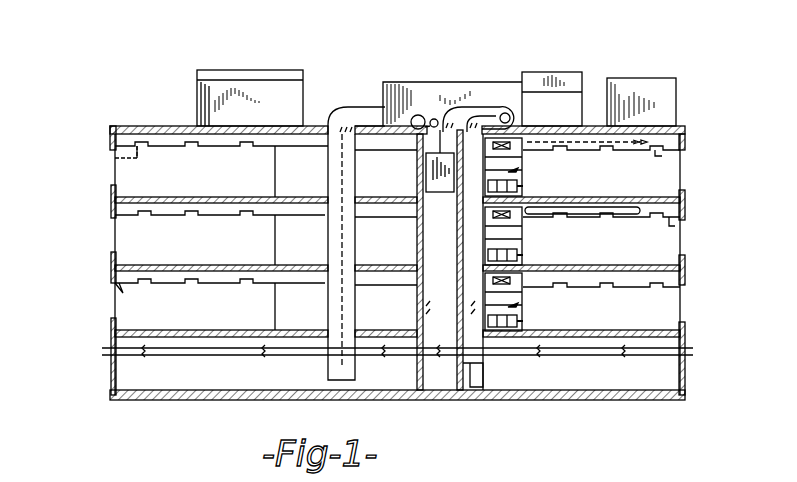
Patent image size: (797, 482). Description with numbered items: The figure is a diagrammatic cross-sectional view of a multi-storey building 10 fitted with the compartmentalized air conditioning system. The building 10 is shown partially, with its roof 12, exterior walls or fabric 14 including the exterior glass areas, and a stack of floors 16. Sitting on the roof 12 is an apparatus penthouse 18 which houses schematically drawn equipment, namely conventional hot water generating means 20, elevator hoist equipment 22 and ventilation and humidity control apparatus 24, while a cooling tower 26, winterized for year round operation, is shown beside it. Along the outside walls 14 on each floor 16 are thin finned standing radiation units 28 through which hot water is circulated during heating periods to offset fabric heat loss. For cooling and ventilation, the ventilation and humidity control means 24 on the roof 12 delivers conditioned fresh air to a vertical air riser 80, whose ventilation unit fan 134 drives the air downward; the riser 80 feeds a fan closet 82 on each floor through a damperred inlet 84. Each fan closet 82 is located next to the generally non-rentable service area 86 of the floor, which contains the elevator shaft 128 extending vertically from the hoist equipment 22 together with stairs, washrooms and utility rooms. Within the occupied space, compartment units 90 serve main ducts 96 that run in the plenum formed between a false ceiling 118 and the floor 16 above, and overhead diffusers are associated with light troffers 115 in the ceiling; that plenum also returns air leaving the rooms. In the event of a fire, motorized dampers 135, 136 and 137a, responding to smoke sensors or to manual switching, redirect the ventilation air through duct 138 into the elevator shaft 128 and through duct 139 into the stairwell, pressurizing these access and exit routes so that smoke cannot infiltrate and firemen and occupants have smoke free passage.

The multi-storey building 10 is at (108, 172).
The roof 12 is at (139, 125).
The exterior walls 14 is at (108, 237).
The floors 16 is at (138, 337).
The apparatus penthouse 18 is at (233, 69).
The hot water generating means 20 is at (222, 95).
The elevator hoist equipment 22 is at (400, 81).
The ventilation and humidity control apparatus 24 is at (533, 107).
The cooling tower 26 is at (635, 97).
The standing radiation units 28 is at (108, 199).
The vertical air riser 80 is at (483, 370).
The fan closet 82 is at (523, 186).
The damperred inlet 84 is at (477, 330).
The service area 86 is at (270, 312).
The compartment units 90 is at (514, 172).
The main duct 96 is at (688, 142).
The light troffers 115 is at (112, 158).
The false ceiling 118 is at (118, 288).
The elevator shaft 128 is at (440, 365).
The ventilation unit fan 134 is at (509, 102).
The motorized damper 135 is at (481, 116).
The motorized damper 136 is at (470, 108).
The motorized damper 137a is at (337, 118).
The duct 138 is at (450, 107).
The duct 139 is at (358, 104).